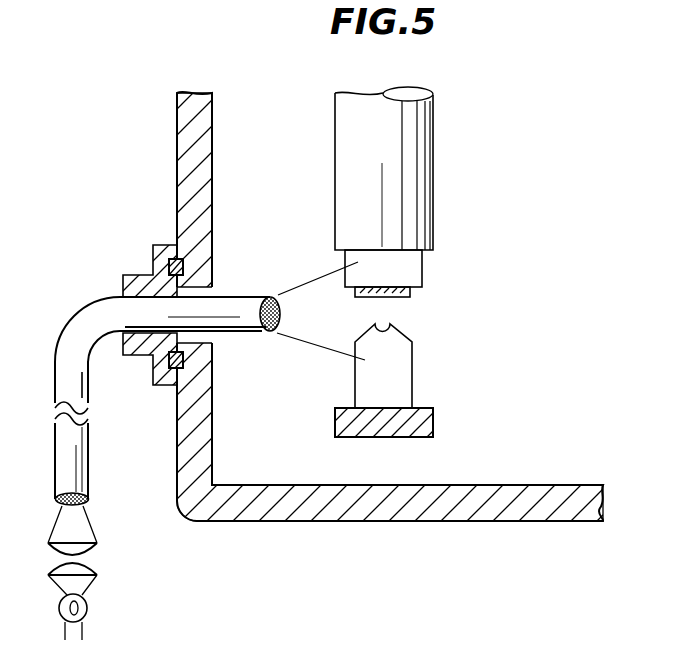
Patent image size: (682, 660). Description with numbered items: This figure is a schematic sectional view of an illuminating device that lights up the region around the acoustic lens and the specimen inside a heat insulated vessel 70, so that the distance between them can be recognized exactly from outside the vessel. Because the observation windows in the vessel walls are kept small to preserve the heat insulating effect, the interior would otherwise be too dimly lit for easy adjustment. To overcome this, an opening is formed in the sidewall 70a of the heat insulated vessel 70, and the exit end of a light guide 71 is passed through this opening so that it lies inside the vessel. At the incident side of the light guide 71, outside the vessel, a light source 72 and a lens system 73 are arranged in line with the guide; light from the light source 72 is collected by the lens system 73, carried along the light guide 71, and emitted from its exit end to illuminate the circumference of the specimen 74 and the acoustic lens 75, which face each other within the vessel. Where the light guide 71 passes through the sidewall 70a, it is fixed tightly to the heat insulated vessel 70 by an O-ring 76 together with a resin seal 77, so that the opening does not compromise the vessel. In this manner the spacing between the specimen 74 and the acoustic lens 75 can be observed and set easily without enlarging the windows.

The heat insulated vessel 70 is at (172, 122).
The sidewall 70a is at (186, 176).
The light guide 71 is at (68, 323).
The light source 72 is at (88, 608).
The lens system 73 is at (97, 558).
The specimen 74 is at (398, 297).
The acoustic lens 75 is at (403, 380).
The O-ring 76 is at (184, 265).
The resin seal 77 is at (125, 276).